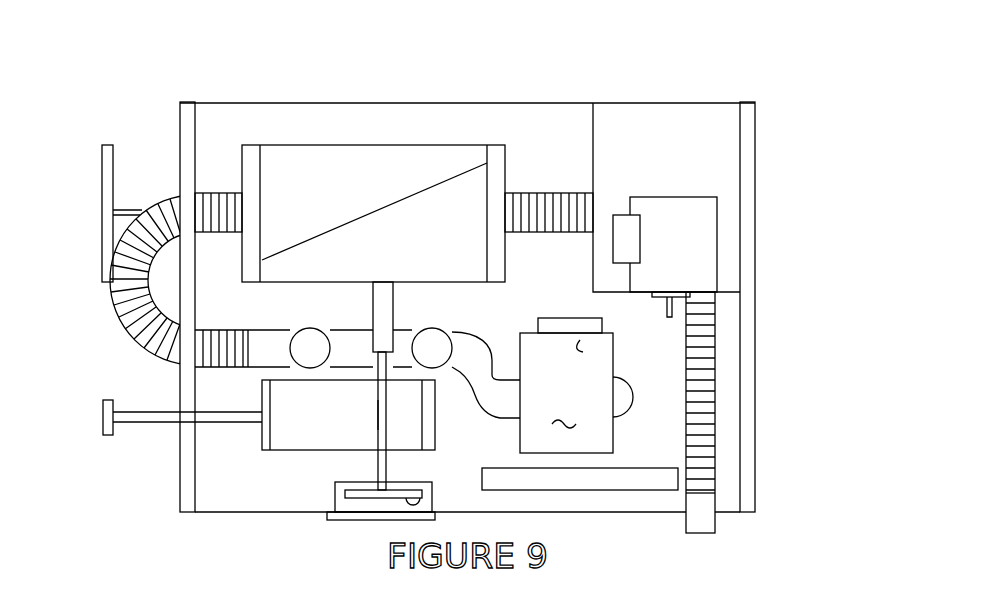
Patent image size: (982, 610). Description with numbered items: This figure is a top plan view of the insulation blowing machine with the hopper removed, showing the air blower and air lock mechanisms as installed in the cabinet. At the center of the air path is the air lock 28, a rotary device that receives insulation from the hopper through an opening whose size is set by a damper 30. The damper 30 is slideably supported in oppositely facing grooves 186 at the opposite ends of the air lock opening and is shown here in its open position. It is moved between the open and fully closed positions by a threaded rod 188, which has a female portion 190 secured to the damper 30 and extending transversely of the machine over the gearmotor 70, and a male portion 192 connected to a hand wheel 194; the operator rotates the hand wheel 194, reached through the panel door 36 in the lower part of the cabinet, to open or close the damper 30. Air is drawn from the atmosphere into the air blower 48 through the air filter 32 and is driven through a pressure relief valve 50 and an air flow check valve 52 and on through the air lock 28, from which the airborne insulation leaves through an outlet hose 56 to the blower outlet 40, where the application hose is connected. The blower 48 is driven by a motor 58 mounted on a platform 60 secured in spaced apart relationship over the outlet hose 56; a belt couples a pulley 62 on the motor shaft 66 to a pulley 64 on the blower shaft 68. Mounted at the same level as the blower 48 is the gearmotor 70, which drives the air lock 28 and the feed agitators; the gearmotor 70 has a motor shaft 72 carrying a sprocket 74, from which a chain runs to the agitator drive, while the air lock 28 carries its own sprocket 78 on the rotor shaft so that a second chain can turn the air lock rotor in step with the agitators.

The air lock 28 is at (325, 182).
The damper 30 is at (428, 222).
The air filter 32 is at (623, 482).
The panel door 36 is at (432, 516).
The blower outlet 40 is at (700, 520).
The air blower 48 is at (576, 393).
The pressure relief valve 50 is at (438, 345).
The air flow check valve 52 is at (313, 347).
The outlet hose 56 is at (553, 205).
The motor 58 is at (690, 248).
The platform 60 is at (702, 145).
The pulley 62 is at (672, 290).
The pulley 64 is at (555, 330).
The motor shaft 66 is at (688, 317).
The blower shaft 68 is at (578, 348).
The gearmotor 70 is at (292, 435).
The motor shaft 72 is at (220, 422).
The sprocket 74 is at (103, 423).
The sprocket 78 is at (113, 180).
The grooves 186 is at (252, 170).
The threaded rod 188 is at (393, 415).
The female portion 190 is at (373, 305).
The male portion 192 is at (383, 413).
The hand wheel 194 is at (358, 495).